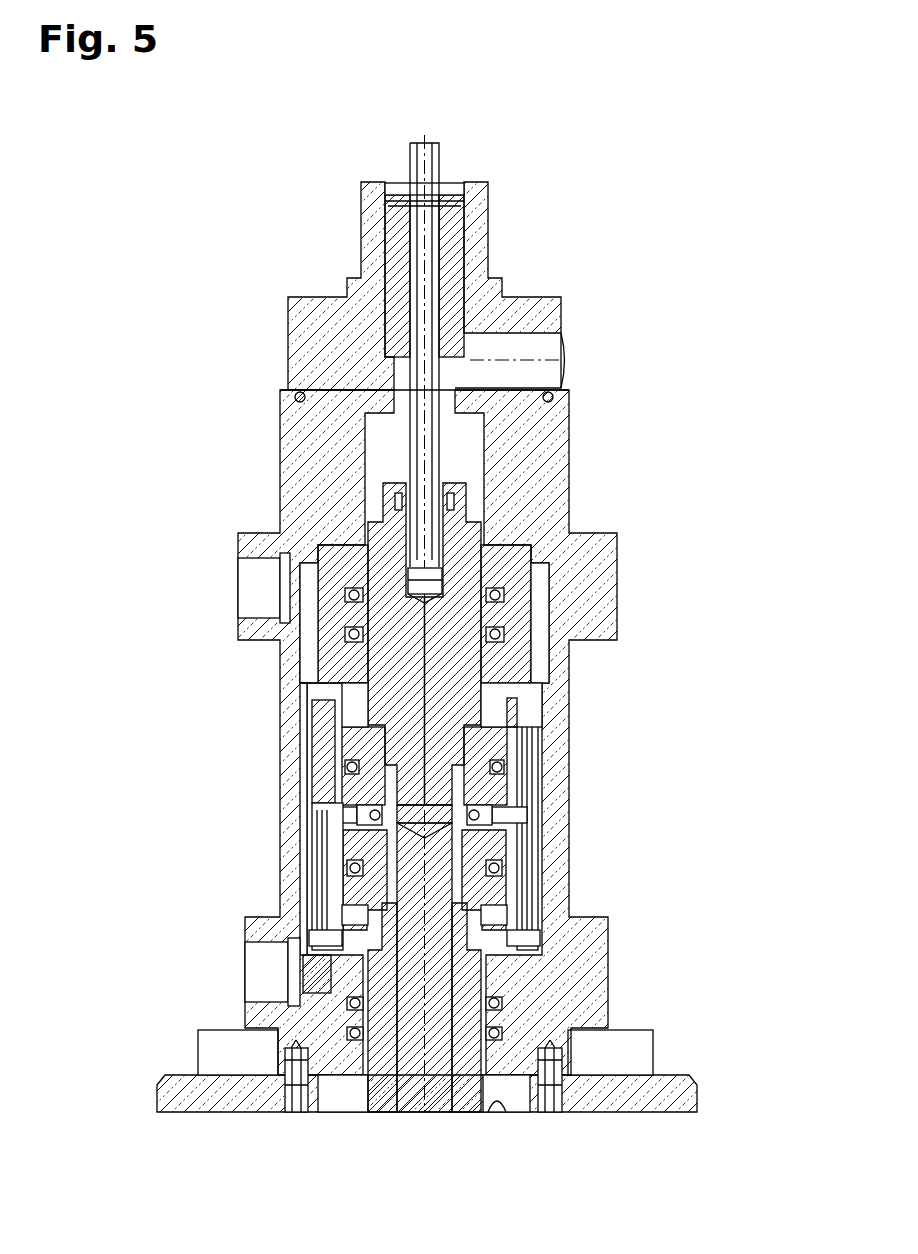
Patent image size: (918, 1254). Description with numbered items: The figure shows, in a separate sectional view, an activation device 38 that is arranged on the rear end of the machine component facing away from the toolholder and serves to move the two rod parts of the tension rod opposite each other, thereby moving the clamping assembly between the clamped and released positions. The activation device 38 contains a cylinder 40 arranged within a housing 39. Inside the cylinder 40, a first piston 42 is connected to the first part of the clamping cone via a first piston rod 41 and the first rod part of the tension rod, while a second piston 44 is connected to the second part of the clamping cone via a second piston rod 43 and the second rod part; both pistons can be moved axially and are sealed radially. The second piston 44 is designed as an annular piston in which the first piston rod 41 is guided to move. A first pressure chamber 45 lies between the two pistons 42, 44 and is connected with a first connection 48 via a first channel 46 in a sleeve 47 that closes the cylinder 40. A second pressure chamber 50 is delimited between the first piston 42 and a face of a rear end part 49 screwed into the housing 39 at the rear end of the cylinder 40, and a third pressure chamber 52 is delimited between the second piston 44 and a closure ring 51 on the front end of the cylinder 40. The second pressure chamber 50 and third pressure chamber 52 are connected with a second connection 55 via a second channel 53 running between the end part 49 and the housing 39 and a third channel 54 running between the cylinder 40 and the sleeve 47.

The activation device 38 is at (605, 727).
The housing 39 is at (555, 790).
The cylinder 40 is at (512, 848).
The first piston rod 41 is at (413, 1047).
The first piston 42 is at (320, 745).
The second piston rod 43 is at (467, 1065).
The second piston 44 is at (360, 850).
The first pressure chamber 45 is at (367, 817).
The first channel 46 is at (325, 890).
The sleeve 47 is at (308, 740).
The first connection 48 is at (273, 967).
The rear end part 49 is at (518, 633).
The second pressure chamber 50 is at (490, 703).
The closure ring 51 is at (513, 938).
The third pressure chamber 52 is at (497, 918).
The second channel 53 is at (310, 668).
The third channel 54 is at (310, 770).
The second connection 55 is at (255, 590).